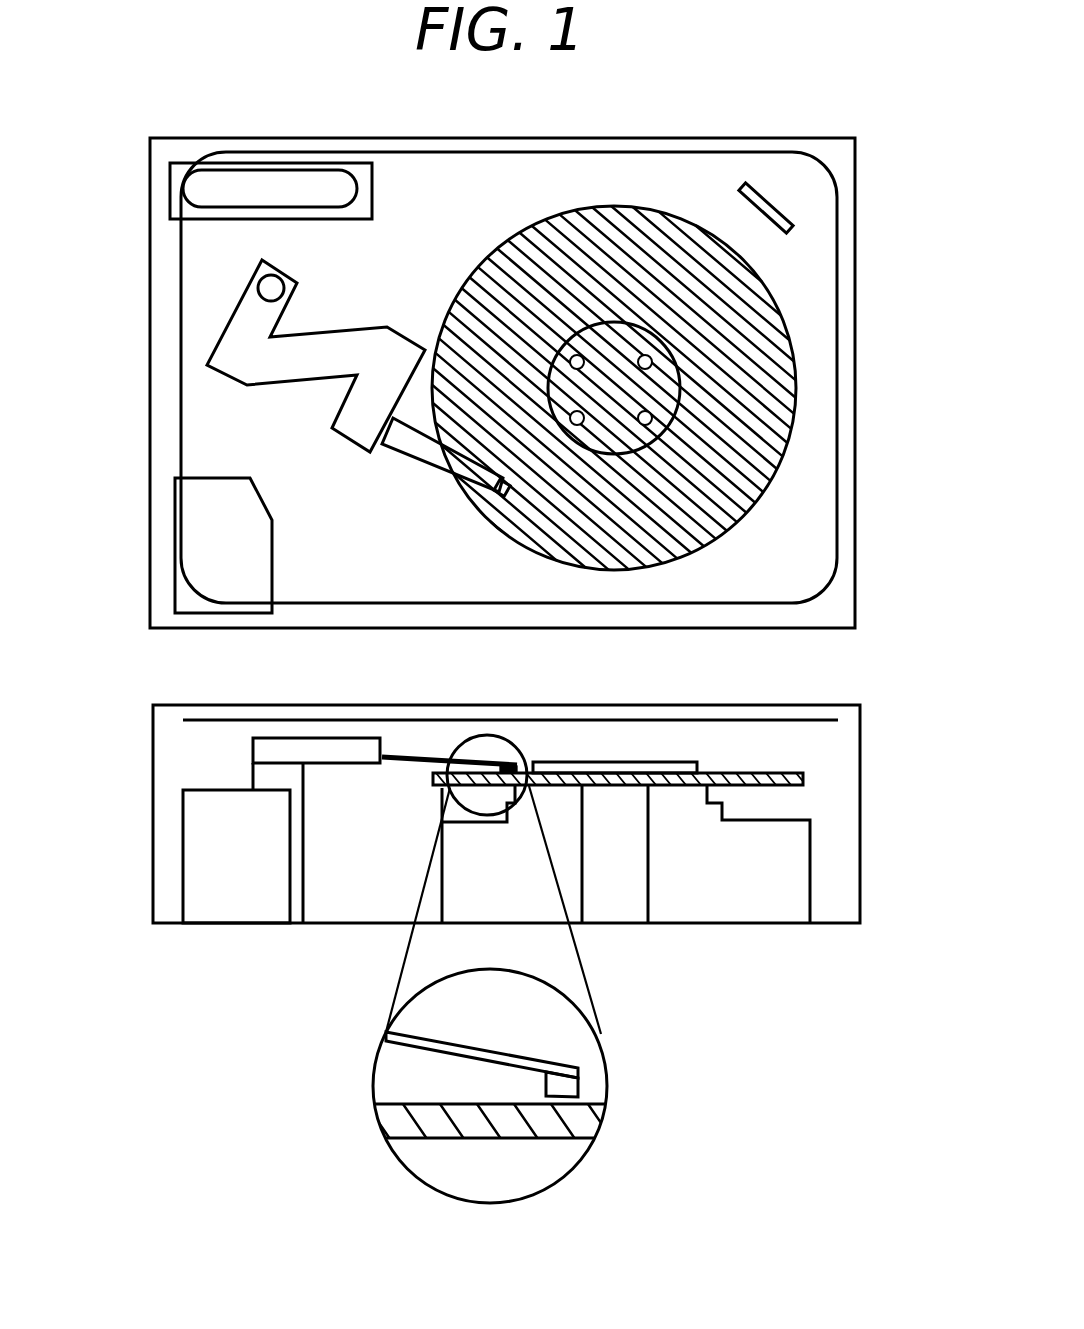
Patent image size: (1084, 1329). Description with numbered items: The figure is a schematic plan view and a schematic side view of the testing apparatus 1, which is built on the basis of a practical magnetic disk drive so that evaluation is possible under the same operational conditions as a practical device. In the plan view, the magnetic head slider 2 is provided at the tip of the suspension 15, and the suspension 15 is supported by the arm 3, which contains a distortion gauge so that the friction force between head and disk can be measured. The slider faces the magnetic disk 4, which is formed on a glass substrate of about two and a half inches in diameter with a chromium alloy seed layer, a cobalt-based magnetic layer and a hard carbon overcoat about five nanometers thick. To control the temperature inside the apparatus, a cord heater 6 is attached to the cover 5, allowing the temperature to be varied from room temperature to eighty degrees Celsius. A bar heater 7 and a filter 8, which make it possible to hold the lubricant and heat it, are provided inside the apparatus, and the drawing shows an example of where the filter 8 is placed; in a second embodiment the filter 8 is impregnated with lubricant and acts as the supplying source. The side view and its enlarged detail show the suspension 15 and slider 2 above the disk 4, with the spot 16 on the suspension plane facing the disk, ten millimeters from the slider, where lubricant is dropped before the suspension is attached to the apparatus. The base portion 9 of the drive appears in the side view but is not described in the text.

The testing apparatus 1 is at (150, 550).
The magnetic head slider 2 is at (503, 495).
The arm 3 is at (358, 432).
The magnetic disk 4 is at (730, 520).
The cover 5 is at (855, 337).
The cord heater 6 is at (842, 570).
The bar heater 7 is at (227, 187).
The filter 8 is at (787, 217).
The base plate 9 is at (812, 883).
The suspension 15 is at (418, 462).
The spot 16 is at (489, 1064).